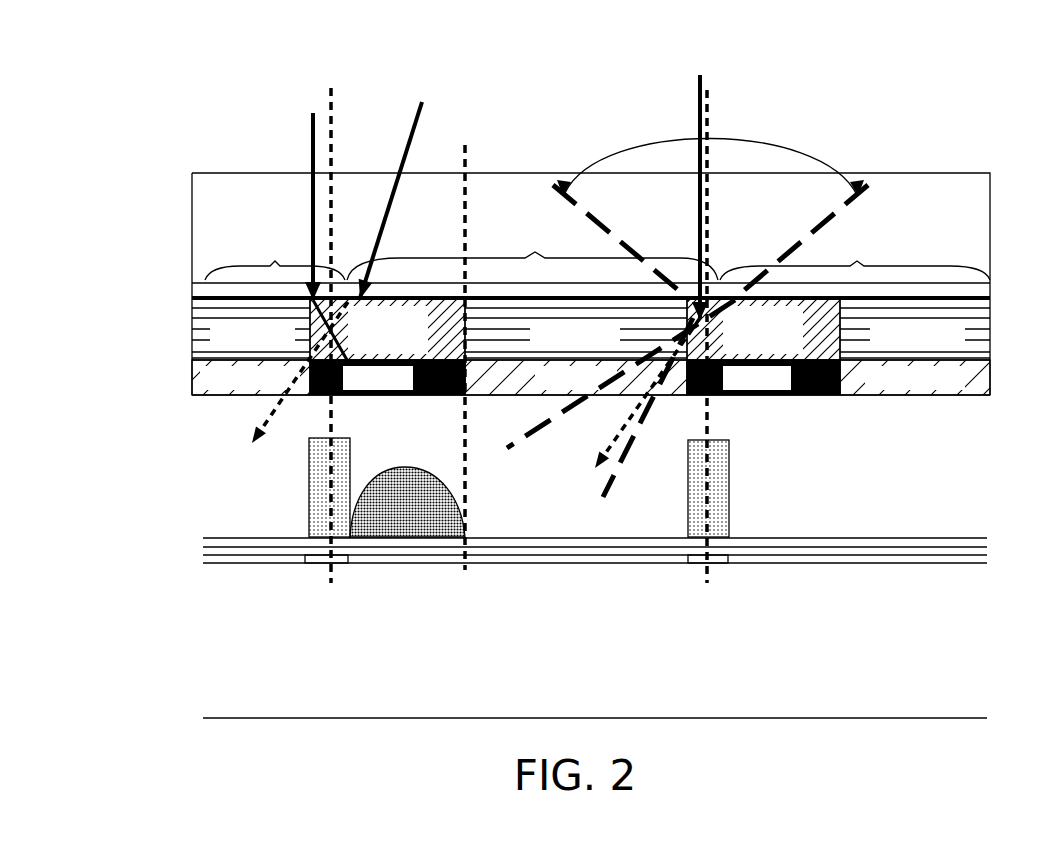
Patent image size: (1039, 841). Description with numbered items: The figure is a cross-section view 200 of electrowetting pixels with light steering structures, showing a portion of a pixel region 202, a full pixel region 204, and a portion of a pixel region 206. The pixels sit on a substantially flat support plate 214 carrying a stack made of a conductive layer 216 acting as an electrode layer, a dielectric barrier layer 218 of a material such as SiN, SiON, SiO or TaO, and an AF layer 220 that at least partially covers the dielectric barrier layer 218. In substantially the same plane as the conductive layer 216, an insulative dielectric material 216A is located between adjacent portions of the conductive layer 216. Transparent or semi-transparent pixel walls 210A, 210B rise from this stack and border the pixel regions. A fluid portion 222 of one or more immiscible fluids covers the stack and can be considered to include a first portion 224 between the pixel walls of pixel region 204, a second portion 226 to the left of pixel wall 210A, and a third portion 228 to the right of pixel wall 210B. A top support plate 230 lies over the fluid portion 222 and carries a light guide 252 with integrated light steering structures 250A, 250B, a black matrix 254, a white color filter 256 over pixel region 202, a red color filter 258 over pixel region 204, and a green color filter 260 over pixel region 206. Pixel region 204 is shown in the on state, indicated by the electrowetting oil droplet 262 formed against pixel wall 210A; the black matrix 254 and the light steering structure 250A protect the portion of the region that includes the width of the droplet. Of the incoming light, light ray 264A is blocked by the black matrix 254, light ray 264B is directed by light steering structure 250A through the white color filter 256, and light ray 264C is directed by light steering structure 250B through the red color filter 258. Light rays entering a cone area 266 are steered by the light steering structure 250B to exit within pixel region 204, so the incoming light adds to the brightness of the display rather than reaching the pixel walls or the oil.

The cross-section view 200 is at (133, 52).
The pixel region 202 is at (275, 256).
The pixel region 204 is at (532, 254).
The pixel region 206 is at (855, 254).
The pixel wall 210A is at (352, 437).
The pixel wall 210B is at (729, 440).
The support plate 214 is at (554, 668).
The conductive layer 216 is at (245, 565).
The dielectric material 216A is at (338, 565).
The dielectric barrier layer 218 is at (627, 555).
The AF layer 220 is at (548, 537).
The fluid portion 222 is at (491, 426).
The first portion 224 is at (516, 479).
The second portion 226 is at (658, 293).
The third portion 228 is at (844, 484).
The top support plate 230 is at (413, 224).
The light steering structure 250A is at (387, 329).
The light steering structure 250B is at (763, 329).
The light guide 252 is at (591, 333).
The black matrix 254 is at (575, 377).
The white color filter 256 is at (251, 377).
The red color filter 258 is at (576, 377).
The green color filter 260 is at (915, 377).
The electrowetting oil droplet 262 is at (442, 478).
The light ray 264A is at (313, 134).
The light ray 264B is at (424, 108).
The light ray 264C is at (705, 92).
The cone area 266 is at (790, 140).